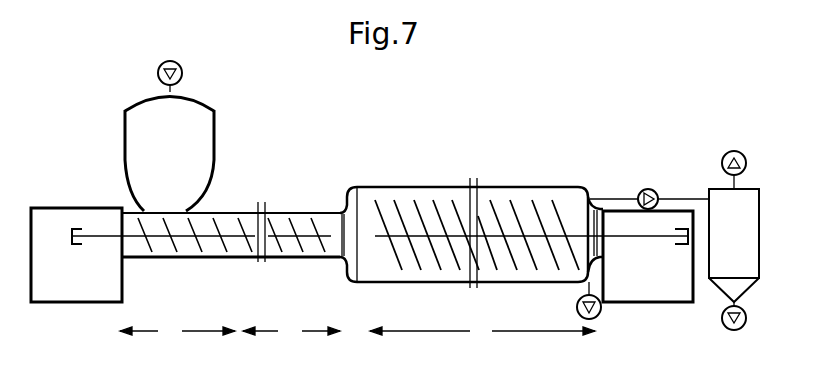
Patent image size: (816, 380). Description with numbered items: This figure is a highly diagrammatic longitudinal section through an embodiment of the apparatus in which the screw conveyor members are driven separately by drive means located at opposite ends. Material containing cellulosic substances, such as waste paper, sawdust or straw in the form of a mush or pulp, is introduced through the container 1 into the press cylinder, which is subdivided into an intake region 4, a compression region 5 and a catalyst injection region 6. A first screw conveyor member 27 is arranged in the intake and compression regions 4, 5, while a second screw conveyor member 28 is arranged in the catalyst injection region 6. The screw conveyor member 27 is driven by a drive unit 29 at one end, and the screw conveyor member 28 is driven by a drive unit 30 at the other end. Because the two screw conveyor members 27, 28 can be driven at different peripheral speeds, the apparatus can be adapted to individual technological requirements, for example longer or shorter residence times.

The container 1 is at (201, 136).
The intake region 4 is at (177, 332).
The compression region 5 is at (291, 332).
The catalyst injection region 6 is at (482, 332).
The screw conveyor member 27 is at (186, 243).
The screw conveyor member 28 is at (398, 232).
The drive unit 29 is at (63, 206).
The drive unit 30 is at (650, 285).